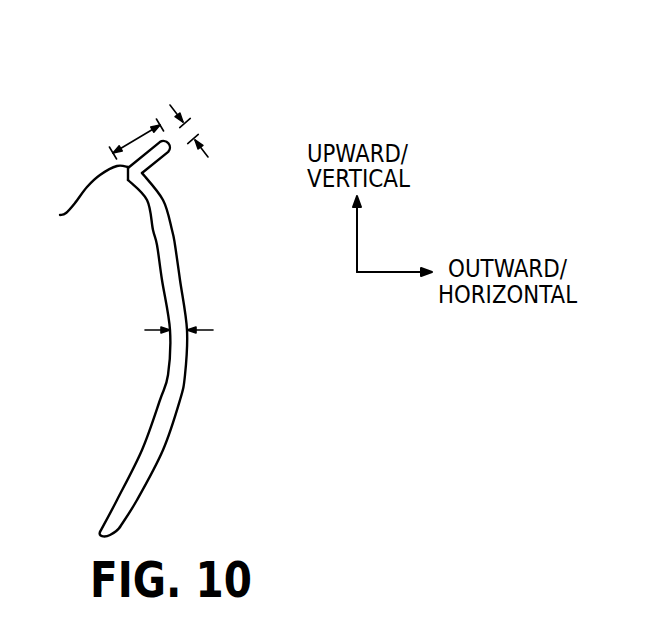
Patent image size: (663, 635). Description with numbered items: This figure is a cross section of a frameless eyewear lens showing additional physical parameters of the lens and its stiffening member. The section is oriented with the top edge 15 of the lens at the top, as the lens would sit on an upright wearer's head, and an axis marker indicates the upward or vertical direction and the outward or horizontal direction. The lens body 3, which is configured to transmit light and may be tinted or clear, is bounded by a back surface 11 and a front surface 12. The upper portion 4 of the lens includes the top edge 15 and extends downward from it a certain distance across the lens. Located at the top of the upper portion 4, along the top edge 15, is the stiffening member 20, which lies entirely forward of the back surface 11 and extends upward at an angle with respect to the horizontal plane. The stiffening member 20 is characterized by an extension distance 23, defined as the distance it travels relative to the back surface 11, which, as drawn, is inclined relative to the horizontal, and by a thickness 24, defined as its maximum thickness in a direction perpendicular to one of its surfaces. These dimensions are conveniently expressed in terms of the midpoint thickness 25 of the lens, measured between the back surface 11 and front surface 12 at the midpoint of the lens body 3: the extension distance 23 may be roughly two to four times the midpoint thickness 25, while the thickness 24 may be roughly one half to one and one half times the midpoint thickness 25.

The lens body 3 is at (178, 354).
The upper portion 4 is at (127, 177).
The back surface 11 is at (168, 347).
The front surface 12 is at (189, 320).
The top edge 15 is at (60, 215).
The stiffening member 20 is at (150, 167).
The extension distance 23 is at (141, 131).
The thickness 24 is at (190, 133).
The midpoint thickness 25 is at (180, 327).